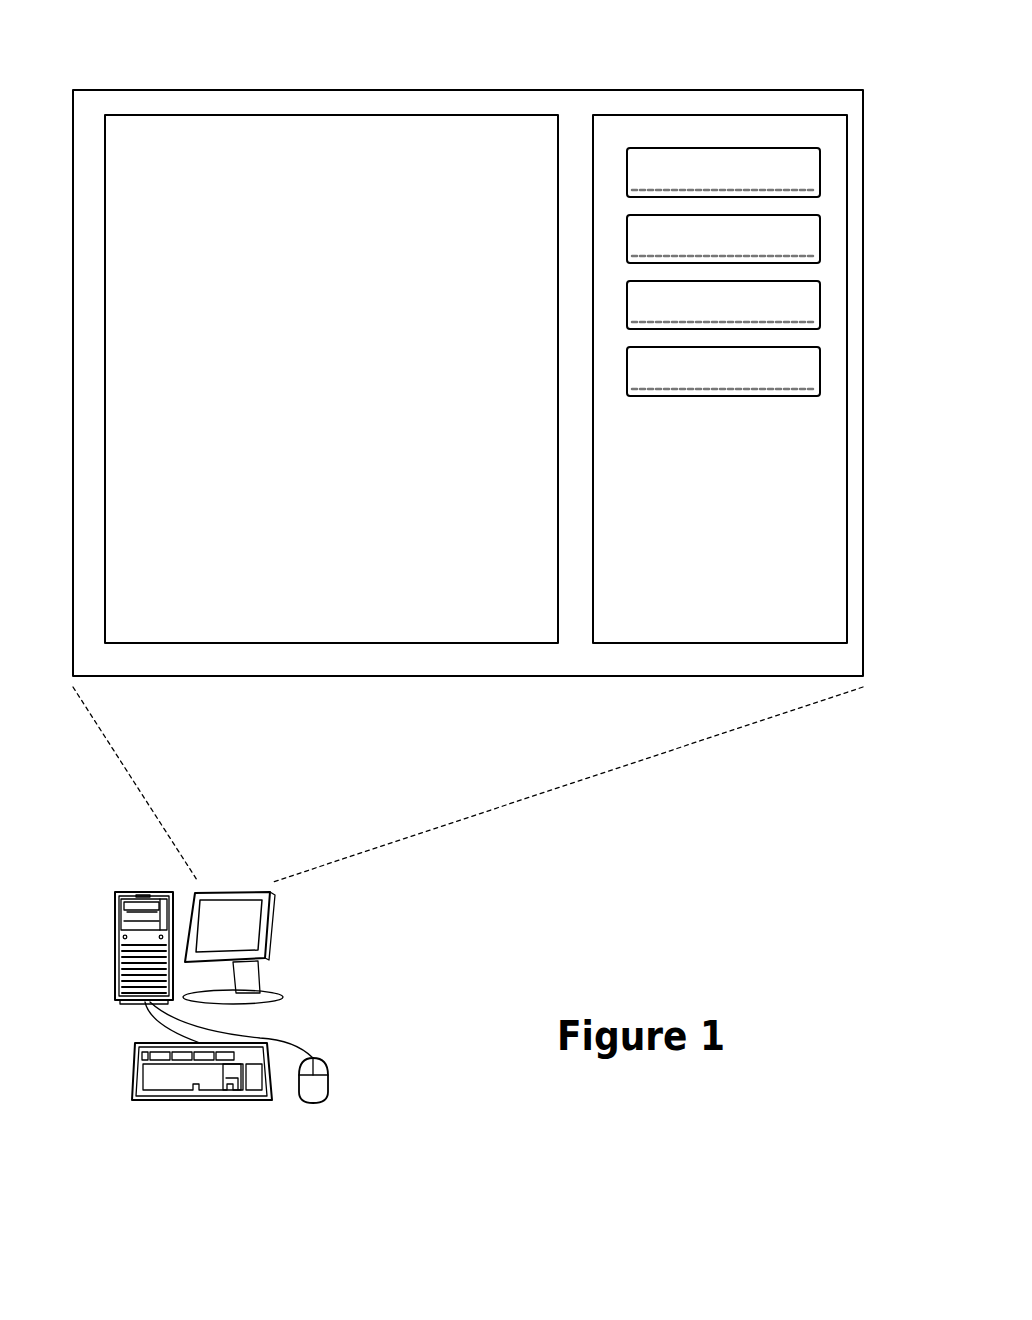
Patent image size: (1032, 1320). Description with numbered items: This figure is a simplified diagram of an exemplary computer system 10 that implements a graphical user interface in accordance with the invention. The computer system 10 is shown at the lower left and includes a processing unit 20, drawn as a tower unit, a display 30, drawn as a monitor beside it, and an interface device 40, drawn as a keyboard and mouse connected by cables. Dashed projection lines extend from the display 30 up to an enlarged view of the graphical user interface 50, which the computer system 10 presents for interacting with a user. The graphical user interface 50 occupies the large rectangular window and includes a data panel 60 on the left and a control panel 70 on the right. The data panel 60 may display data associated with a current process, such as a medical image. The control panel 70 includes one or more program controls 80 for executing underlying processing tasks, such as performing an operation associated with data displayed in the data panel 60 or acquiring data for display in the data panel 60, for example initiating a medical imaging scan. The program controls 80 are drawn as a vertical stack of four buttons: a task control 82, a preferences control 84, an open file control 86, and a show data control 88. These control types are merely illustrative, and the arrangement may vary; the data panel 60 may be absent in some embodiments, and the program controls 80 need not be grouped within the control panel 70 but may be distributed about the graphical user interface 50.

The computer system 10 is at (103, 857).
The processing unit 20 is at (113, 947).
The display 30 is at (270, 943).
The interface device 40 is at (267, 1138).
The graphical user interface 50 is at (188, 90).
The data panel 60 is at (340, 115).
The control panel 70 is at (643, 115).
The program controls 80 is at (767, 318).
The task control 82 is at (823, 173).
The preferences control 84 is at (823, 237).
The open file control 86 is at (823, 303).
The show data control 88 is at (823, 369).